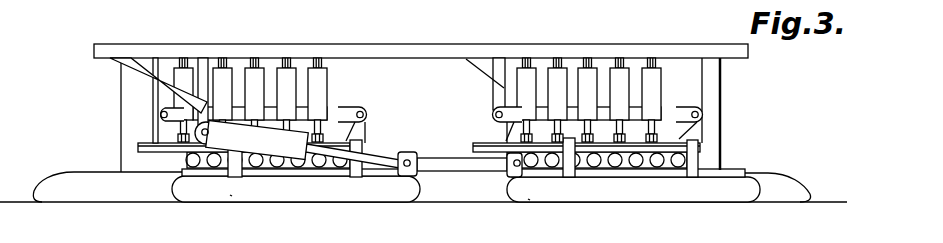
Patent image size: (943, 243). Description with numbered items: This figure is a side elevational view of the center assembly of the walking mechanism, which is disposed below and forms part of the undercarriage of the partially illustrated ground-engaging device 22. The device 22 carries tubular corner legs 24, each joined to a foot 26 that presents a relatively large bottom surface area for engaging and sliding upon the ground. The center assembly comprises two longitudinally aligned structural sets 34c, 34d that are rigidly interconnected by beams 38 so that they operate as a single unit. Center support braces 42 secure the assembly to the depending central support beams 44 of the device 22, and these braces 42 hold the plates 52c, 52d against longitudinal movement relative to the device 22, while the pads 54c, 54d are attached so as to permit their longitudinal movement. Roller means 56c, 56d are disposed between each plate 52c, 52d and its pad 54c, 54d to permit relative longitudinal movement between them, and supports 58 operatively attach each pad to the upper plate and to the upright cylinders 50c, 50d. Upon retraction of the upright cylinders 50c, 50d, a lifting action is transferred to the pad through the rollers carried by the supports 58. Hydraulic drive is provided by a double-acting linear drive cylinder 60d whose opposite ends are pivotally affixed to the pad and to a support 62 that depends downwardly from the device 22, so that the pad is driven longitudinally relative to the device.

The ground-engaging device 22 is at (114, 40).
The tubular corner leg 24 is at (126, 160).
The foot 26 is at (70, 178).
The structural set 34c is at (306, 209).
The structural set 34d is at (647, 208).
The beam 38 is at (449, 165).
The center support brace 42 is at (341, 112).
The central support beam 44 is at (158, 104).
The upright cylinder 50c is at (327, 76).
The upright cylinder 50d is at (565, 75).
The plate 52c is at (368, 142).
The plate 52d is at (484, 143).
The pad 54c is at (228, 196).
The pad 54d is at (527, 200).
The roller means 56c is at (178, 165).
The roller means 56d is at (714, 163).
The support 58 is at (362, 178).
The drive cylinder 60d is at (306, 148).
The support 62 is at (202, 68).